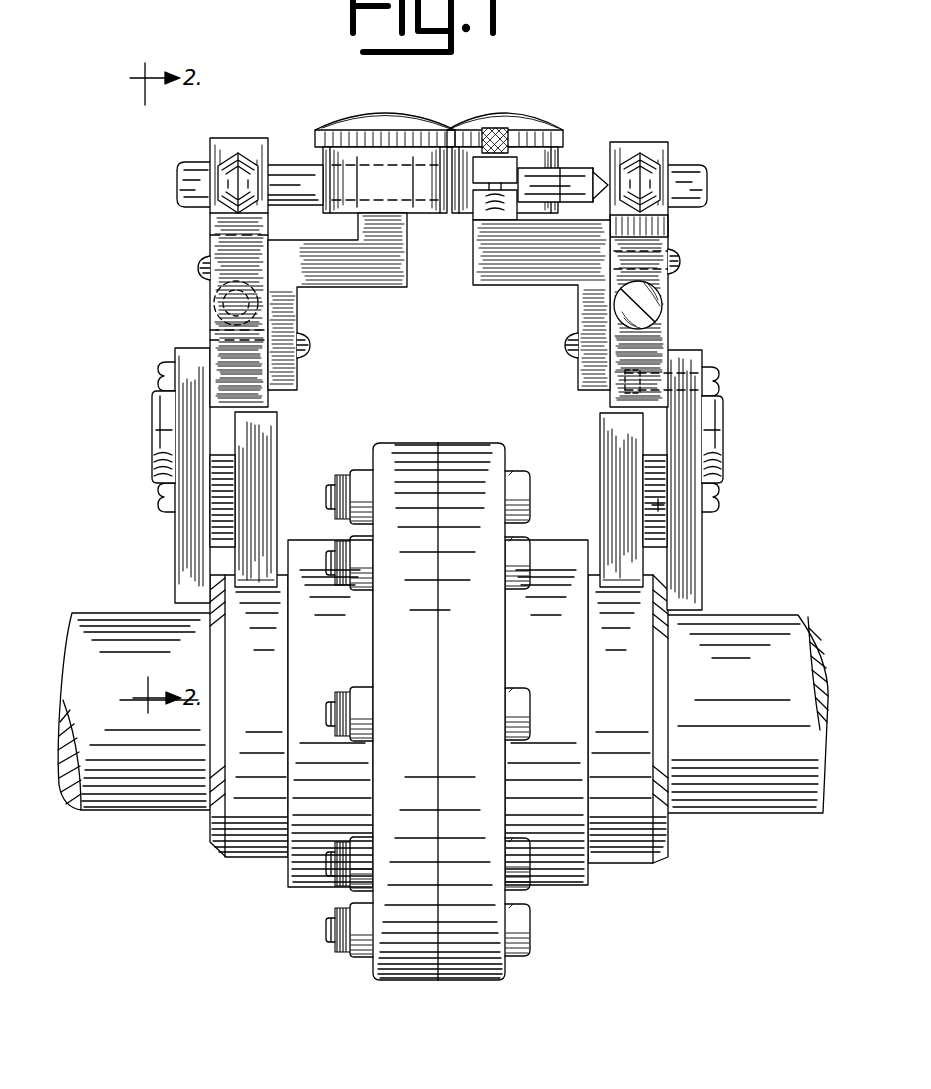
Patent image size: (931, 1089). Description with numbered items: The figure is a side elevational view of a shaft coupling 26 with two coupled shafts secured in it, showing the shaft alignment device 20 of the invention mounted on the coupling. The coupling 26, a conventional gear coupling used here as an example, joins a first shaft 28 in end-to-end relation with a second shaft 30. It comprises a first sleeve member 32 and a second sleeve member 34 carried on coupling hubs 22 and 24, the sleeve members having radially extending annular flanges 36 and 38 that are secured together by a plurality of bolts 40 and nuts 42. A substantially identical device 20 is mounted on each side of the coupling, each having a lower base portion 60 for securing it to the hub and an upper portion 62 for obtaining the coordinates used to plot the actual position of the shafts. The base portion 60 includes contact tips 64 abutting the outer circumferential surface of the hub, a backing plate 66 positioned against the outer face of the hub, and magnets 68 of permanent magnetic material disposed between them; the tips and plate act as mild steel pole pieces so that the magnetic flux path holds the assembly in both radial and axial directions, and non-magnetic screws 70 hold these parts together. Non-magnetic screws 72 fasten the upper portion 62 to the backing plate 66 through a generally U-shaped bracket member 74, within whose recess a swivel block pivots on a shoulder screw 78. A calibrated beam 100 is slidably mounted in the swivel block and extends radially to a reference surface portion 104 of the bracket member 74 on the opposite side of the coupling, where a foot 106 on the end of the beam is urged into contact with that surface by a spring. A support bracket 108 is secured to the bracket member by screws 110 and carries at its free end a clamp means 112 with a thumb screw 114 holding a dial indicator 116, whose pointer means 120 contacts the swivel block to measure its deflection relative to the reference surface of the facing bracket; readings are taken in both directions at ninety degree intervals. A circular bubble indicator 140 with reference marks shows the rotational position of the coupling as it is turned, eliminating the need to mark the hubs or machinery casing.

The shaft alignment device 20 is at (458, 228).
The coupling hub 22 is at (226, 860).
The coupling hub 24 is at (662, 855).
The shaft coupling 26 is at (430, 744).
The first shaft 28 is at (92, 810).
The second shaft 30 is at (772, 812).
The first sleeve member 32 is at (292, 890).
The second sleeve member 34 is at (590, 884).
The annular flange 36 is at (385, 984).
The annular flange 38 is at (502, 984).
The bolt 40 is at (520, 478).
The nut 42 is at (362, 472).
The base portion 60 is at (458, 466).
The upper portion 62 is at (204, 240).
The contact tip 64 is at (622, 436).
The backing plate 66 is at (186, 584).
The magnet 68 is at (220, 505).
The screw 70 is at (157, 496).
The screw 72 is at (163, 372).
The U-shaped bracket member 74 is at (226, 328).
The shoulder screw 78 is at (662, 310).
The beam 100 is at (286, 166).
The reference surface portion 104 is at (230, 140).
The foot 106 is at (238, 152).
The support bracket 108 is at (405, 290).
The screw 110 is at (198, 266).
The clamp means 112 is at (478, 210).
The thumb screw 114 is at (490, 127).
The dial indicator 116 is at (375, 118).
The pointer means 120 is at (598, 178).
The circular bubble indicator 140 is at (153, 422).